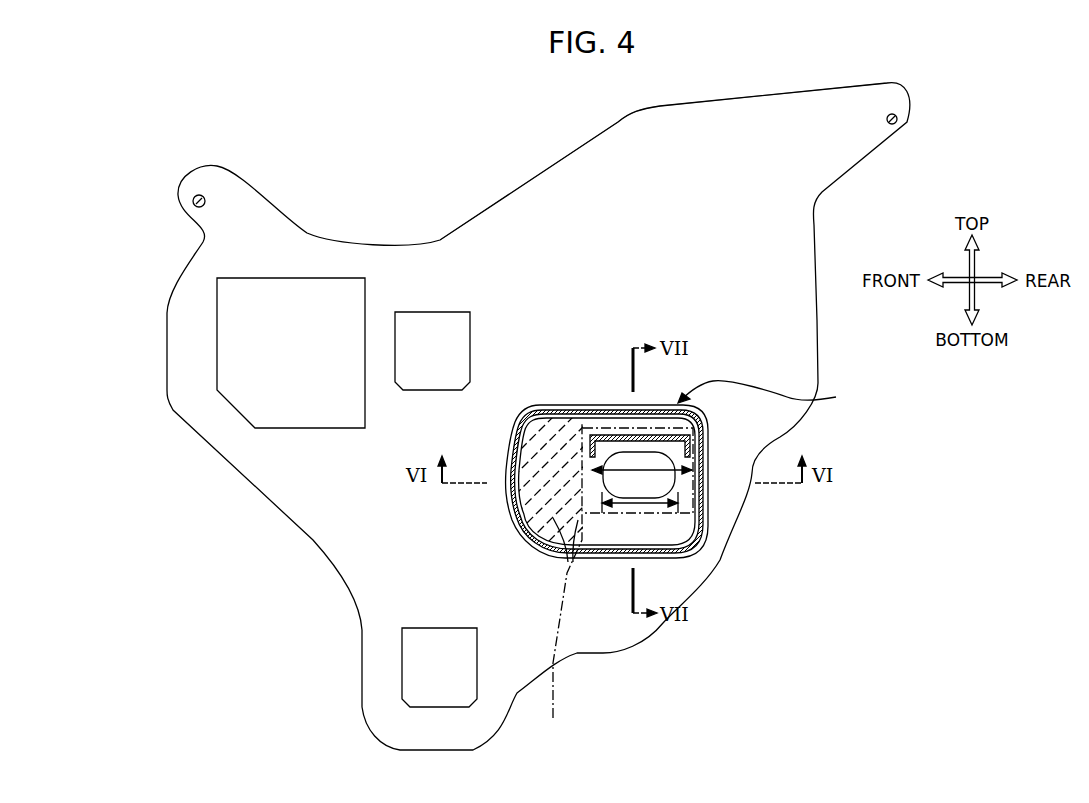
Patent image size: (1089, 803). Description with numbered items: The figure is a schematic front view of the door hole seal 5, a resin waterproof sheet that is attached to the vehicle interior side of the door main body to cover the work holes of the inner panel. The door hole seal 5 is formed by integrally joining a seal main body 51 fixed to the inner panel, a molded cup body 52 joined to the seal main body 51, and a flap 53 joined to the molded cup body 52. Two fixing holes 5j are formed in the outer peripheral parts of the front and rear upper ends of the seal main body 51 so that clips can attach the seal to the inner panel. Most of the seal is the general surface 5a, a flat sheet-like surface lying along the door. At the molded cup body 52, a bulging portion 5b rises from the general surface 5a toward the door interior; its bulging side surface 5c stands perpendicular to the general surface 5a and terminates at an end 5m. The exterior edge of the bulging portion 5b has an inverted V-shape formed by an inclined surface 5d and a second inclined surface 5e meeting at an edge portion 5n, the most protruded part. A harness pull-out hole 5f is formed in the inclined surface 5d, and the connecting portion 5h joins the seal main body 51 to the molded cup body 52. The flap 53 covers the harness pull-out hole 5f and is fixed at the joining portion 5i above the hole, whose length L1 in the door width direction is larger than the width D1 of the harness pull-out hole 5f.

The door hole seal 5 is at (275, 163).
The general surface 5a is at (583, 168).
The bulging portion 5b is at (593, 525).
The bulging side surface 5c is at (512, 427).
The end of the bulging side surface 5m is at (550, 481).
The inclined surface 5d is at (620, 532).
The second inclined surface 5e is at (562, 581).
The harness pull-out hole 5f is at (656, 489).
The connecting portion 5h is at (606, 556).
The joining portion 5i is at (666, 430).
The fixing holes 5j is at (194, 198).
The edge portion 5n is at (594, 410).
The seal main body 51 is at (494, 212).
The molded cup body 52 is at (769, 393).
The flap 53 is at (682, 546).
The length of the joining portion L1 is at (695, 470).
The width of the harness pull-out hole D1 is at (680, 514).